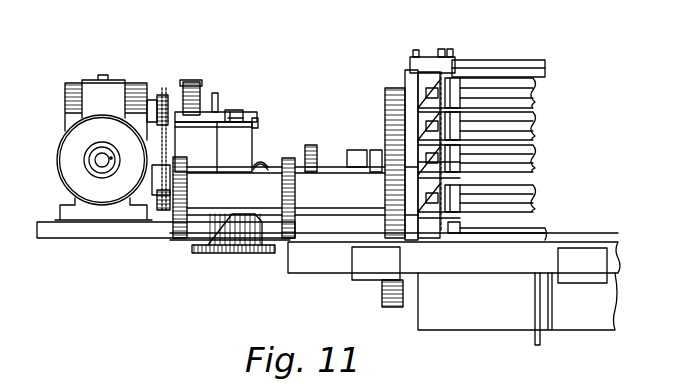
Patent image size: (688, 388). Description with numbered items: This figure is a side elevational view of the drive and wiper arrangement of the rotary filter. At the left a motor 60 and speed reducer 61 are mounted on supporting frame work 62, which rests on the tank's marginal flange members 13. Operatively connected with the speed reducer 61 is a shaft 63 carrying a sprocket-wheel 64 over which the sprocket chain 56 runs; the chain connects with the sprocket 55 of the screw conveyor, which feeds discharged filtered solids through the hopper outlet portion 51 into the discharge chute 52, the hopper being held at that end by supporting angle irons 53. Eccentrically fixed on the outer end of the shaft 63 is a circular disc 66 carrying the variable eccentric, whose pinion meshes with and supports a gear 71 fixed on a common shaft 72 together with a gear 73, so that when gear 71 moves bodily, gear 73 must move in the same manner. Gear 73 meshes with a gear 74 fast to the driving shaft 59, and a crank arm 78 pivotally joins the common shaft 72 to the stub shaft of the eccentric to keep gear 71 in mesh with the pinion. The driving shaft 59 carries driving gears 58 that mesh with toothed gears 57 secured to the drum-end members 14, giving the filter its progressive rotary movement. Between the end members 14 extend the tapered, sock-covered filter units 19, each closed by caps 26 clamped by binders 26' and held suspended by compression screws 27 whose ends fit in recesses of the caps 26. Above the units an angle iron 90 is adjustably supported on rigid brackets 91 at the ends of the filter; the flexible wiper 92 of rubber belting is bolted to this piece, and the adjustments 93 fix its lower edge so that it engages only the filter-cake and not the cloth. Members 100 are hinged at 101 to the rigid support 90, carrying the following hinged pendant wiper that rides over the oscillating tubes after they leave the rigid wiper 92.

The marginal flange members 13 is at (593, 240).
The drum-end members 14 is at (415, 68).
The filter units 19 is at (512, 155).
The closure caps 26 is at (493, 120).
The binders 26' is at (480, 220).
The compression screws 27 is at (452, 82).
The outlet portion 51 is at (352, 227).
The discharge chute 52 is at (232, 253).
The supporting angle irons 53 is at (360, 210).
The sprocket 55 is at (163, 207).
The sprocket chain 56 is at (190, 95).
The toothed gears 57 is at (386, 116).
The driving gears 58 is at (408, 157).
The common shaft 59 is at (298, 158).
The motor 60 is at (103, 190).
The speed reducer 61 is at (75, 107).
The supporting frame work 62 is at (65, 213).
The shaft 63 is at (158, 95).
The sprocket-wheel 64 is at (167, 90).
The circular disc 66 is at (198, 90).
The gear 71 is at (218, 100).
The common shaft 72 is at (268, 135).
The gear 73 is at (258, 125).
The gear 74 is at (245, 118).
The crank arm 78 is at (243, 112).
The angle iron 90 is at (463, 58).
The rigid brackets 91 is at (410, 76).
The flexible wiper 92 is at (546, 71).
The adjustments 93 is at (415, 50).
The members 100 is at (441, 49).
The hinge 101 is at (450, 49).